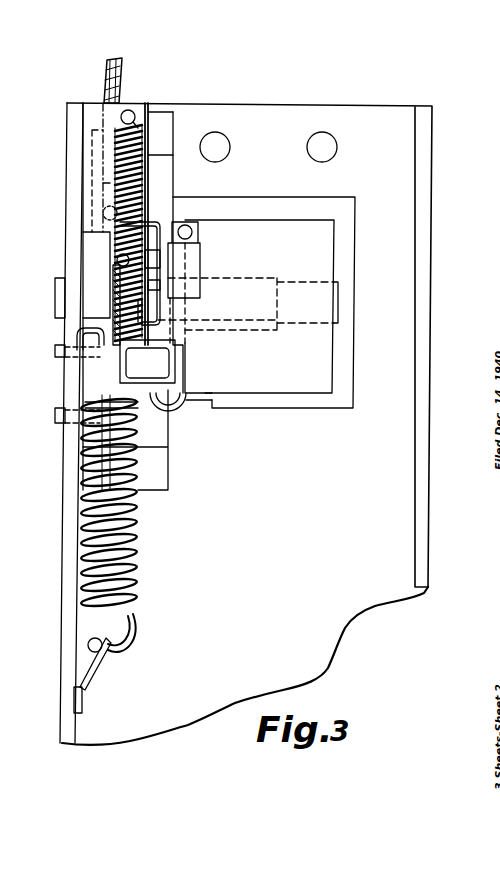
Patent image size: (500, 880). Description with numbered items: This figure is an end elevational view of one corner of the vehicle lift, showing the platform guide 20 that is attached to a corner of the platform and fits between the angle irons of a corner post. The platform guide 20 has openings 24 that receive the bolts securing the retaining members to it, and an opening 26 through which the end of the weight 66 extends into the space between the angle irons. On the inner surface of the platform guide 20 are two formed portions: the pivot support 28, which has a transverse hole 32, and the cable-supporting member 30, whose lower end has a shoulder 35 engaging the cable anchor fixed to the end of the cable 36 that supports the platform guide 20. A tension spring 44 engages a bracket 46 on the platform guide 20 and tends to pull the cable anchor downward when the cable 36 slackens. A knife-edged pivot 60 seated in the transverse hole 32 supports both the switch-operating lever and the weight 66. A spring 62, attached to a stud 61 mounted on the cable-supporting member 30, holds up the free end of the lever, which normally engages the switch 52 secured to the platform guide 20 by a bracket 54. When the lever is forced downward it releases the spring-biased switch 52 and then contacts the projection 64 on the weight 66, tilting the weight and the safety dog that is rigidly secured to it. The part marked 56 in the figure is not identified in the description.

The platform guide 20 is at (325, 608).
The openings 24 is at (215, 146).
The opening 26 is at (343, 213).
The pivot support 28 is at (163, 140).
The cable-supporting member 30 is at (95, 118).
The transverse hole 32 is at (115, 270).
The shoulder 35 is at (92, 130).
The cable 36 is at (122, 73).
The spring 44 is at (138, 560).
The bracket 46 is at (83, 702).
The switch 52 is at (120, 259).
The bracket 54 is at (110, 222).
The bolt 56 is at (83, 360).
The knife-edged pivot 60 is at (58, 300).
The stud 61 is at (133, 114).
The spring 62 is at (148, 169).
The projection 64 is at (180, 414).
The weight 66 is at (318, 362).